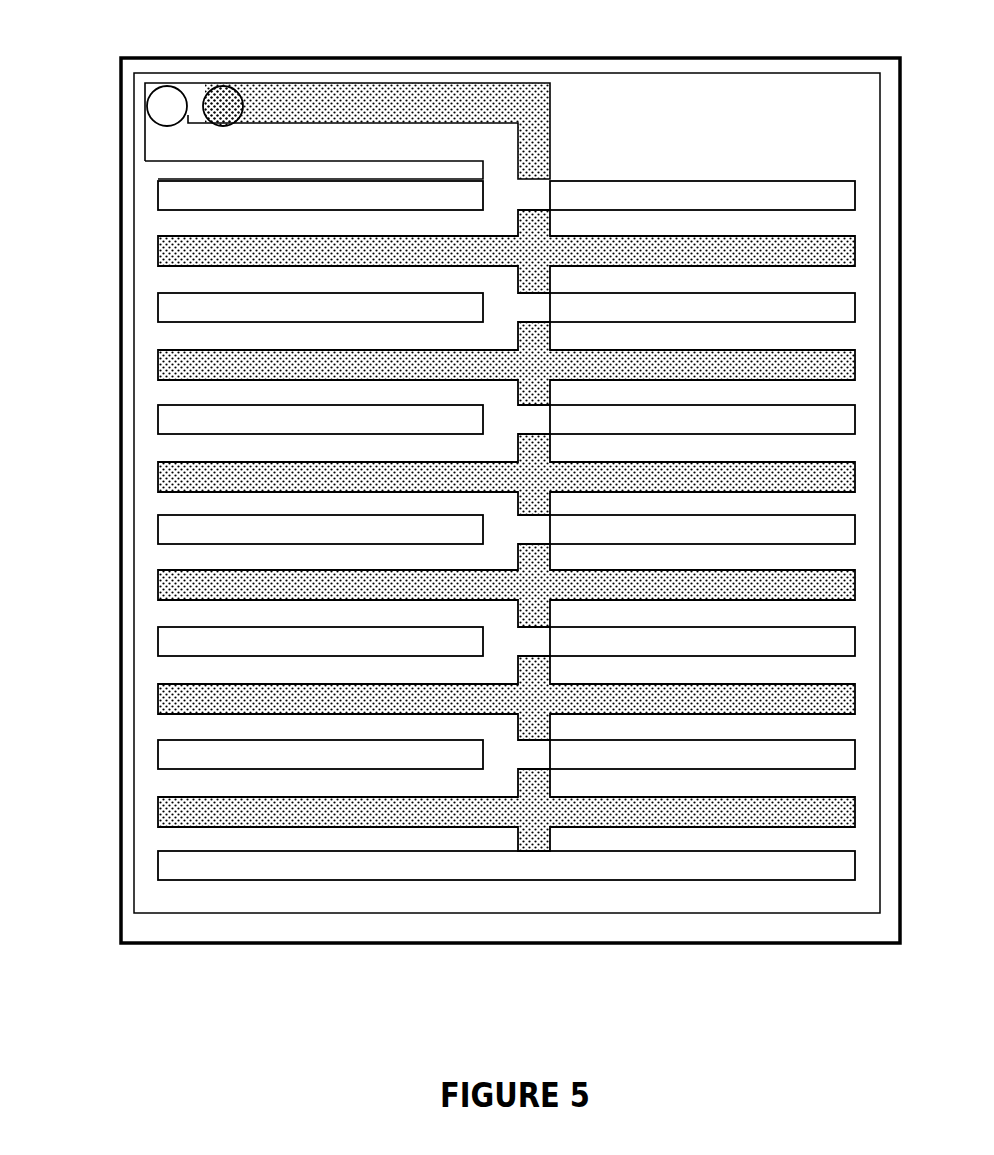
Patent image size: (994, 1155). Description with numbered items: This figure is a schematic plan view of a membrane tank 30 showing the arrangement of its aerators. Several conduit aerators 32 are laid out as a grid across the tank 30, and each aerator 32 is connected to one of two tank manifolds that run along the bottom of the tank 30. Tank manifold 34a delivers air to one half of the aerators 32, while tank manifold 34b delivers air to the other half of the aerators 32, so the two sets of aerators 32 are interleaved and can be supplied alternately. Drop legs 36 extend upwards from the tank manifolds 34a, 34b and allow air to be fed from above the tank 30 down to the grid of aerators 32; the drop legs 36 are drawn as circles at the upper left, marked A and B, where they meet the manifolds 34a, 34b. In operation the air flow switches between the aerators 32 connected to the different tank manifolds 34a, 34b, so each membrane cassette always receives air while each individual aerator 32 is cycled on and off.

The membrane tank 30 is at (120, 796).
The conduit aerators 32 is at (165, 570).
The tank manifold 34a is at (360, 83).
The tank manifold 34b is at (153, 163).
The drop legs 36 is at (245, 105).
The point A is at (240, 85).
The point B is at (155, 88).